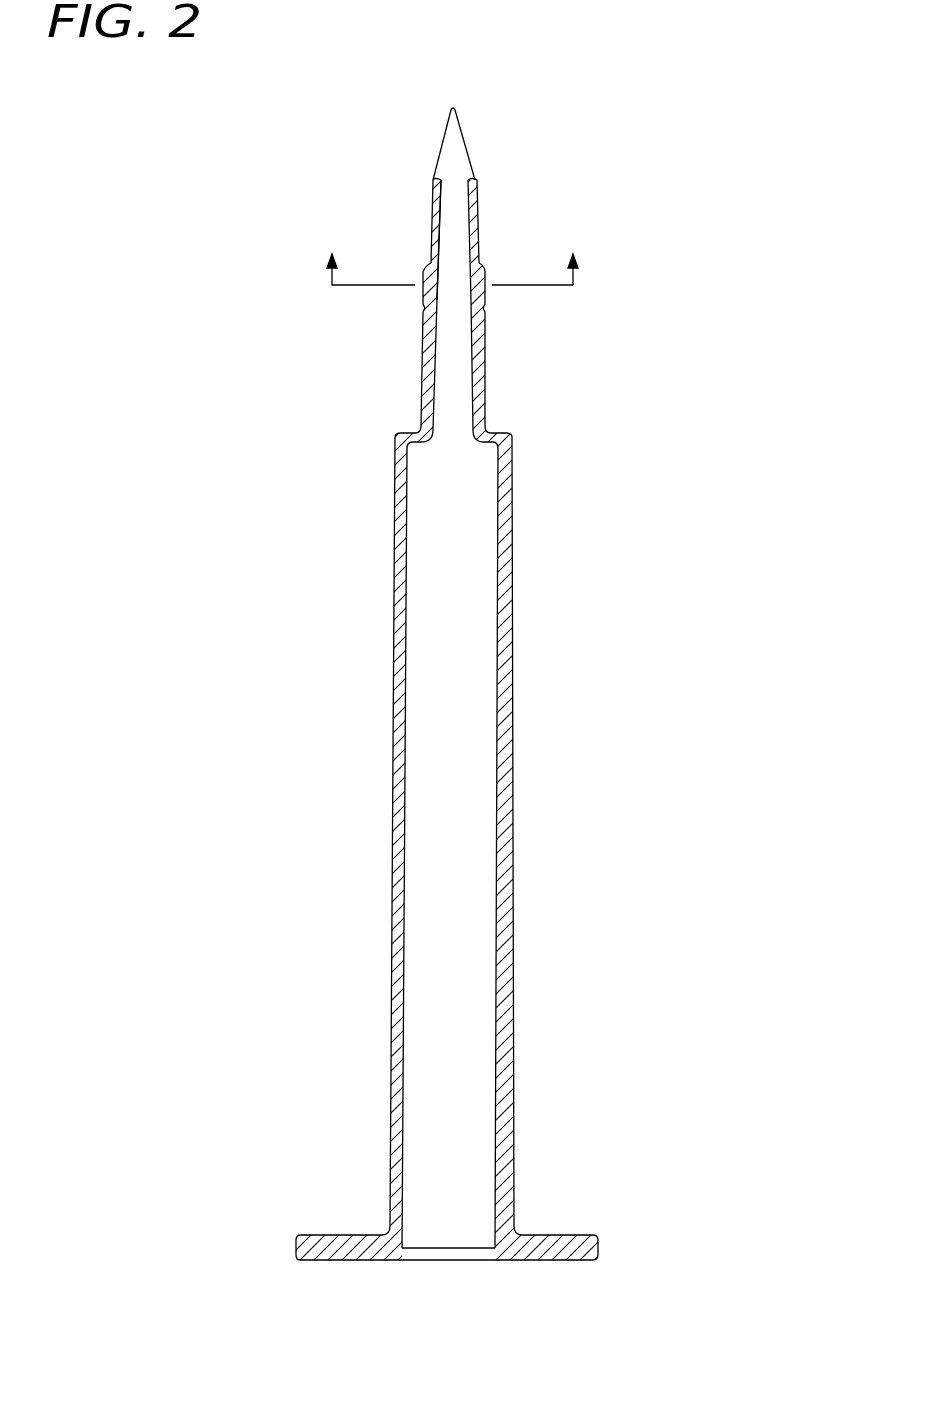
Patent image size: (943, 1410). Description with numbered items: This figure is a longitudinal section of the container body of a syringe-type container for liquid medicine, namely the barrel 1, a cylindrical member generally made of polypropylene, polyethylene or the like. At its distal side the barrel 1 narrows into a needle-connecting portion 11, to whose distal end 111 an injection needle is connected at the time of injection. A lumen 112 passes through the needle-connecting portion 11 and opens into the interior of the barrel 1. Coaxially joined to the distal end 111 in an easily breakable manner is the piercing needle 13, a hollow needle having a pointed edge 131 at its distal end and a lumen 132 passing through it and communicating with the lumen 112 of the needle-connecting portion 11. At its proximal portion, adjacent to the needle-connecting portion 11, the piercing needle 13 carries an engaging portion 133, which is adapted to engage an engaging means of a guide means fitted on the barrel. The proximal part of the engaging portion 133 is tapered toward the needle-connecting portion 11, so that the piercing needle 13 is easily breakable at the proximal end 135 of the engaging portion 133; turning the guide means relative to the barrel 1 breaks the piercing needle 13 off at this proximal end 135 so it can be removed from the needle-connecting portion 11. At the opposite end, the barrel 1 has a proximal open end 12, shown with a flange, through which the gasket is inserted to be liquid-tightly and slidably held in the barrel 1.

The barrel 1 is at (471, 675).
The needle-connecting portion 11 is at (485, 380).
The distal end 111 is at (483, 307).
The lumen 112 is at (433, 372).
The proximal open end 12 is at (400, 1262).
The piercing needle 13 is at (439, 218).
The pointed edge 131 is at (455, 110).
The lumen 132 is at (440, 188).
The engaging portion 133 is at (423, 290).
The proximal end 135 is at (425, 307).